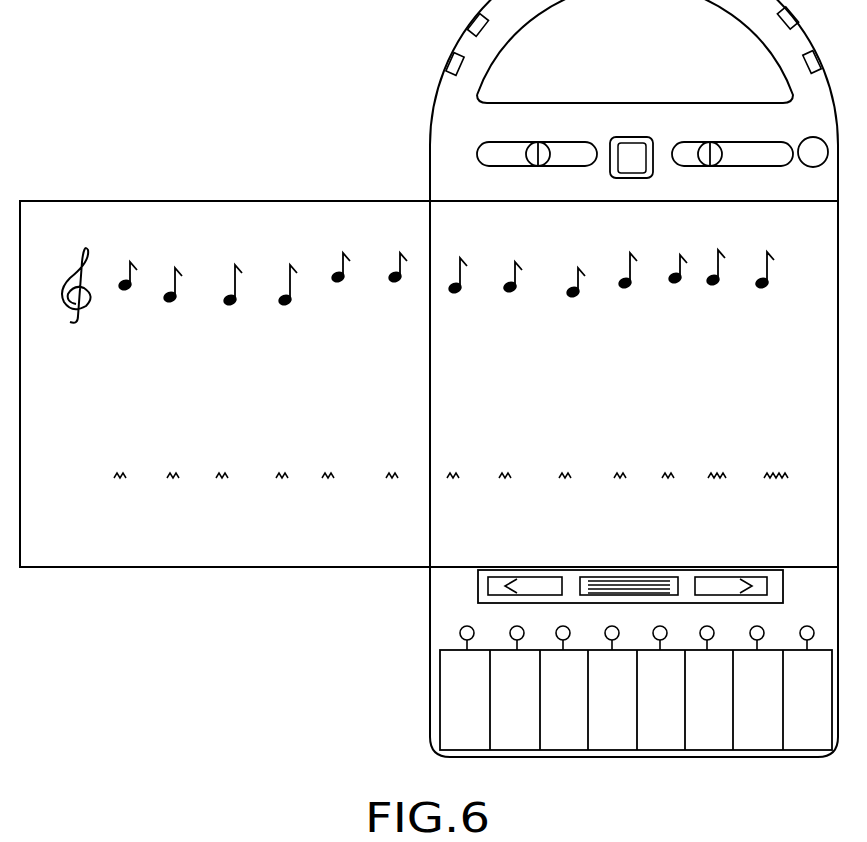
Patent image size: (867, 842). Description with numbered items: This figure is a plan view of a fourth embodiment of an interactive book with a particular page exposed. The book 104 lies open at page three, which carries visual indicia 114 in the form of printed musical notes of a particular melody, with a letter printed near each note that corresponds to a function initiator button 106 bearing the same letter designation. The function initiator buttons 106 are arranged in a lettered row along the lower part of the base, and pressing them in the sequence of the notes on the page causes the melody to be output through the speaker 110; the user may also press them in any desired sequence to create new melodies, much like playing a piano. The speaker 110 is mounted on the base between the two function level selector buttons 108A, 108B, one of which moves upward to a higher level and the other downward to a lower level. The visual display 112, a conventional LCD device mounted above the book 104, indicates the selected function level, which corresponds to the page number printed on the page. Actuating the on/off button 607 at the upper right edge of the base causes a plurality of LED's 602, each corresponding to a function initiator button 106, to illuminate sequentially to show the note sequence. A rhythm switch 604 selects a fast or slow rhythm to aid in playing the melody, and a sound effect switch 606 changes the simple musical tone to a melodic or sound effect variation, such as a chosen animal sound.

The book 104 is at (122, 201).
The visual indicia 114 is at (425, 311).
The rhythm switch 604 is at (497, 142).
The sound effect switch 606 is at (683, 141).
The visual display 112 is at (624, 135).
The on/off button 607 is at (812, 167).
The function level selector button 108A is at (530, 579).
The function level selector button 108B is at (713, 579).
The speaker 110 is at (608, 577).
The LED's 602 is at (560, 641).
The function initiator button 106 is at (557, 733).